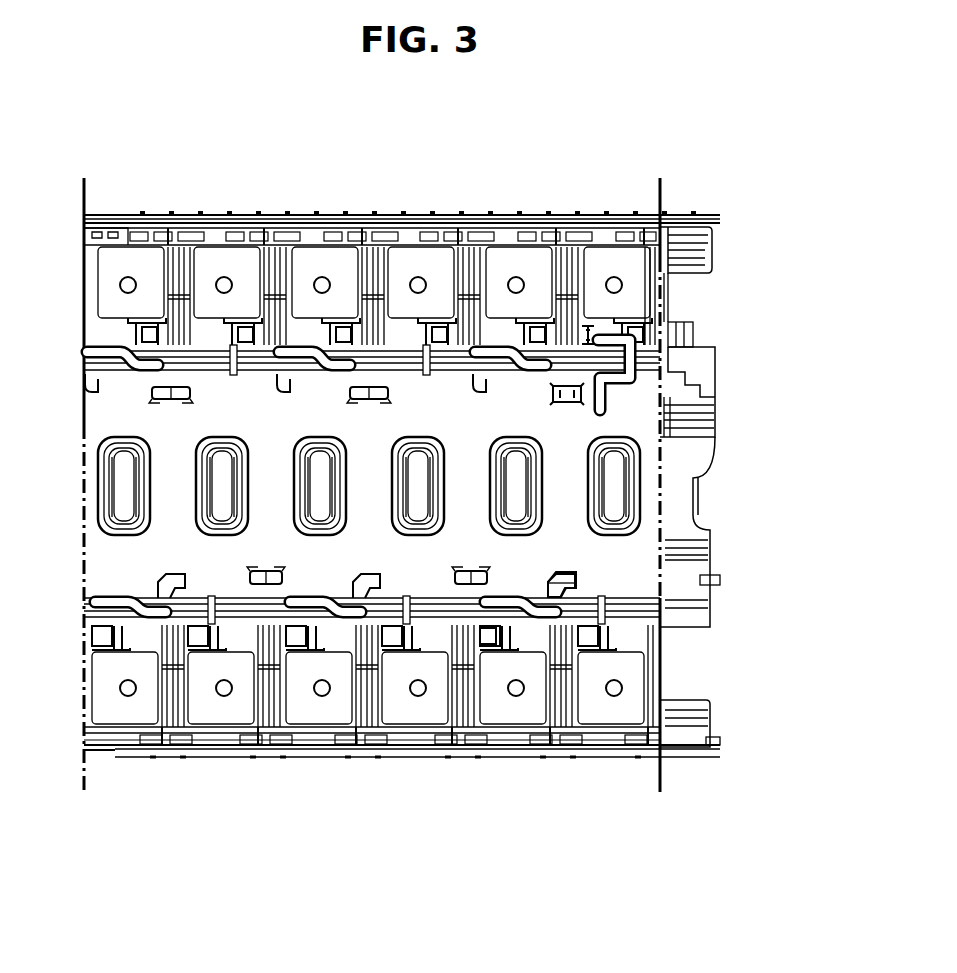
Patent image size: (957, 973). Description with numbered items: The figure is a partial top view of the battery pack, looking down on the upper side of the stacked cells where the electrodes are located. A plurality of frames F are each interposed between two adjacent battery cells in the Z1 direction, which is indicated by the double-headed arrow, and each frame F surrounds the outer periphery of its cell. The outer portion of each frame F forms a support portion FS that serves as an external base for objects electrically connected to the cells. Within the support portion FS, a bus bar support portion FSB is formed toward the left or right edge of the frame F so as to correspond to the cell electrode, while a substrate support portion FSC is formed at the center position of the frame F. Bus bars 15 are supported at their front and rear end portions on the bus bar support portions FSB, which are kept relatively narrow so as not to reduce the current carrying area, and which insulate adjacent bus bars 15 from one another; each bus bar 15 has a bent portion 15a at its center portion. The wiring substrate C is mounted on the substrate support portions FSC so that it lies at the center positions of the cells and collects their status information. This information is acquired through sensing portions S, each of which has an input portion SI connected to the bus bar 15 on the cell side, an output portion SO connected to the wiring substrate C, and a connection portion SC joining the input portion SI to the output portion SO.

The bus bar 15 is at (415, 250).
The bent portion 15a is at (470, 258).
The bus bar support portion FSB is at (673, 302).
The support portion FS is at (750, 332).
The substrate support portion FSC is at (705, 421).
The wiring substrate C is at (648, 488).
The sensing portion S is at (556, 552).
The output portion SO is at (576, 582).
The frame F is at (256, 744).
The connection portion SC is at (477, 632).
The input portion SI is at (493, 646).
The Z1 direction Z1 is at (432, 892).